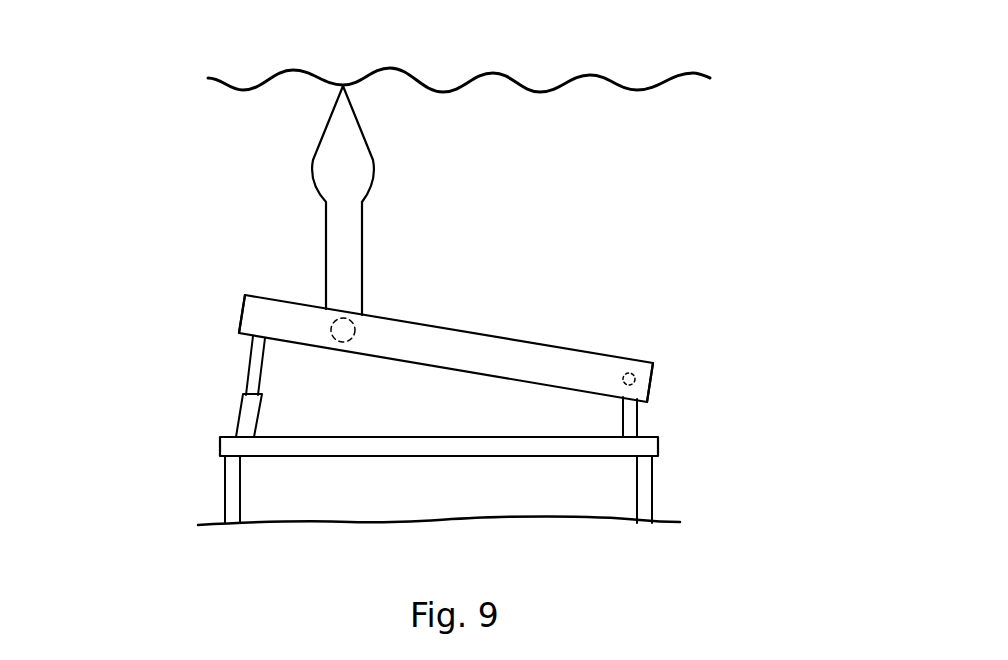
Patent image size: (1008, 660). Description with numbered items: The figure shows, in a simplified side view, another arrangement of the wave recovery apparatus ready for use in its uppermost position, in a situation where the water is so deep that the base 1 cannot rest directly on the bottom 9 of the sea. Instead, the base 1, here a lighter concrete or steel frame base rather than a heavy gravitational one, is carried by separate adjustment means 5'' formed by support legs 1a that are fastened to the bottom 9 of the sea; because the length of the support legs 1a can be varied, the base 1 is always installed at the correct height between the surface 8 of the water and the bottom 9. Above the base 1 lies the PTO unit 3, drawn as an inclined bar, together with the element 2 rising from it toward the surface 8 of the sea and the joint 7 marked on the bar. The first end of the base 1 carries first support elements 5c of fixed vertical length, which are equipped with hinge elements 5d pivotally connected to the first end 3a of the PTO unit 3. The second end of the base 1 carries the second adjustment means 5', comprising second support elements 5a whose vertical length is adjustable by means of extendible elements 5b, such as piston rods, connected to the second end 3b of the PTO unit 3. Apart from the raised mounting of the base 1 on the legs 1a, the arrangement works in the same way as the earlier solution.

The base 1 is at (303, 441).
The support legs 1a is at (228, 500).
The funnel / inlet tube 2 is at (322, 202).
The PTO unit 3 is at (537, 342).
The arm first end 3a is at (657, 378).
The arm second end 3b is at (242, 315).
The second adjustment means 5' is at (420, 352).
The separate adjustment means 5'' is at (358, 472).
The second support elements 5a is at (240, 413).
The extendible elements 5b is at (250, 366).
The first support elements 5c is at (622, 423).
The hinge elements 5d is at (629, 372).
The pivot joint 7 is at (357, 330).
The surface 8 is at (638, 88).
The bottom 9 is at (672, 520).